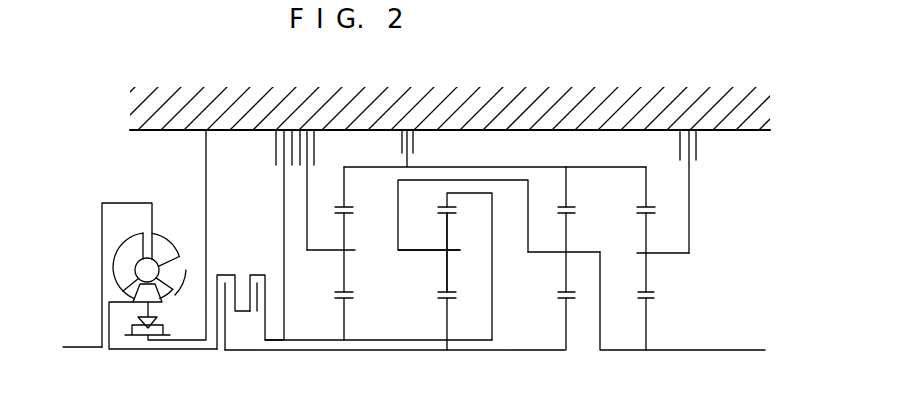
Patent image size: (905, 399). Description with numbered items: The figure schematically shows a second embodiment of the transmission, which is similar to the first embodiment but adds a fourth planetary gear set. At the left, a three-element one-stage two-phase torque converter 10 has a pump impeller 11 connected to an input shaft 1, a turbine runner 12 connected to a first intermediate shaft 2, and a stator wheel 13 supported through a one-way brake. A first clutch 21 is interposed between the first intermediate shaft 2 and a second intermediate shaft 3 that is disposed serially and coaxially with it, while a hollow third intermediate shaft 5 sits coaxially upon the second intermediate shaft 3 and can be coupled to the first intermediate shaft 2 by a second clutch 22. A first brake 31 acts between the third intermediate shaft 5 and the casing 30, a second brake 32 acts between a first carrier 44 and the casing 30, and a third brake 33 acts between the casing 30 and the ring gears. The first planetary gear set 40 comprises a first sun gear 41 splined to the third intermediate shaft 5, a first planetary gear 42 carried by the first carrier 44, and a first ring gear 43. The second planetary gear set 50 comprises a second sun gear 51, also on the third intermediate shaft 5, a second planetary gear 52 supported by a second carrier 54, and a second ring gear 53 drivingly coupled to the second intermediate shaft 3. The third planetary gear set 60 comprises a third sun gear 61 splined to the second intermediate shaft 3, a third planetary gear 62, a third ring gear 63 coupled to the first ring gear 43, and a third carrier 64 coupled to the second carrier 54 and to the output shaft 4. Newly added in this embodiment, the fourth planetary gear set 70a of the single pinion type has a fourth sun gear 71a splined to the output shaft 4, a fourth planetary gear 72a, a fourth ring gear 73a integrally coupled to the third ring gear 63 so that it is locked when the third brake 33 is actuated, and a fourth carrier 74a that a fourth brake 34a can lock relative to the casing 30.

The input shaft 1 is at (76, 348).
The first intermediate shaft 2 is at (150, 350).
The second intermediate shaft 3 is at (251, 351).
The output shaft 4 is at (712, 351).
The third intermediate shaft 5 is at (300, 341).
The torque converter 10 is at (174, 243).
The pump impeller 11 is at (183, 294).
The turbine runner 12 is at (127, 260).
The stator wheel 13 is at (135, 295).
The first clutch 21 is at (222, 274).
The second clutch 22 is at (256, 274).
The casing 30 is at (484, 71).
The first brake 31 is at (283, 127).
The second brake 32 is at (309, 127).
The third brake 33 is at (410, 127).
The fourth brake 34a is at (689, 127).
The first planetary gear set 40 is at (347, 281).
The first sun gear 41 is at (345, 318).
The first planetary gear 42 is at (345, 265).
The first ring gear 43 is at (345, 187).
The first carrier 44 is at (320, 251).
The second planetary gear set 50 is at (463, 266).
The second sun gear 51 is at (448, 318).
The second planetary gear 52 is at (448, 266).
The second ring gear 53 is at (448, 191).
The second carrier 54 is at (418, 250).
The third planetary gear set 60 is at (585, 281).
The third sun gear 61 is at (566, 316).
The third planetary gear 62 is at (566, 265).
The third ring gear 63 is at (567, 186).
The third carrier 64 is at (540, 252).
The fourth planetary gear set 70a is at (676, 263).
The fourth sun gear 71a is at (647, 318).
The fourth planetary gear 72a is at (647, 270).
The fourth ring gear 73a is at (690, 186).
The fourth carrier 74a is at (661, 253).